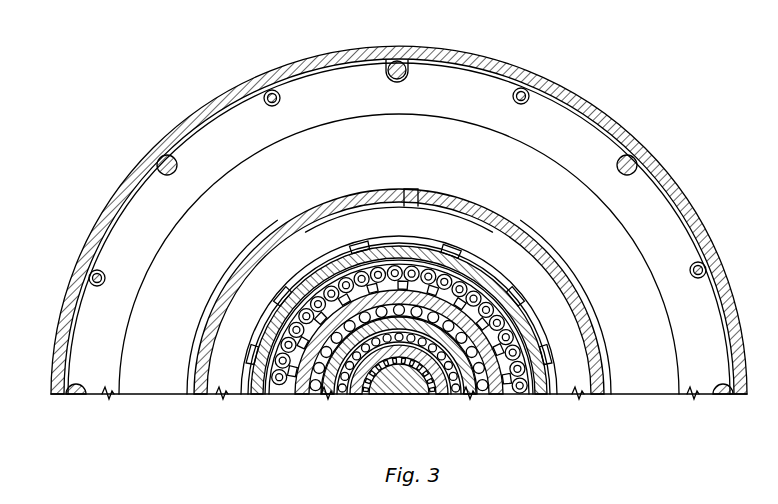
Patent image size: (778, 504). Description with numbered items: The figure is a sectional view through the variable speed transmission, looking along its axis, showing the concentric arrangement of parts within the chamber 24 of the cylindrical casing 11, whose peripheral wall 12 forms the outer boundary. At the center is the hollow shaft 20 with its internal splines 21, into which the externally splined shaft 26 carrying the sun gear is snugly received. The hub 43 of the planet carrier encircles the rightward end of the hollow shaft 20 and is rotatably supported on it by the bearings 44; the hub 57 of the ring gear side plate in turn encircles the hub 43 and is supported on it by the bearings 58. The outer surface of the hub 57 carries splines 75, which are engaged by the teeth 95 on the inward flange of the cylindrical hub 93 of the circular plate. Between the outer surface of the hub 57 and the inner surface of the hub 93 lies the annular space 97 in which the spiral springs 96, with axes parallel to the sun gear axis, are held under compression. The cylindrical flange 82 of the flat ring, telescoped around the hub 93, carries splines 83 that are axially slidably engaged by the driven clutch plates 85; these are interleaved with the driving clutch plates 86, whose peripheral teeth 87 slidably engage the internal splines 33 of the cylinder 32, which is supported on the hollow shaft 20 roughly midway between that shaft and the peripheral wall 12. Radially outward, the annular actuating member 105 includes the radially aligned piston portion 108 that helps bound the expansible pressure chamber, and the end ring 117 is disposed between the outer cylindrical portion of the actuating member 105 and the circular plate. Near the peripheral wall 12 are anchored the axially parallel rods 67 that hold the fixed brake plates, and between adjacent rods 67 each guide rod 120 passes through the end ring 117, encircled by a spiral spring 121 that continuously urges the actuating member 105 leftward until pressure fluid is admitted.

The casing 11 is at (541, 70).
The peripheral wall 12 is at (466, 52).
The hollow shaft 20 is at (445, 390).
The internal splines 21 is at (372, 387).
The chamber 24 is at (661, 176).
The externally splined shaft 26 is at (410, 390).
The cylinder 32 is at (378, 190).
The internal splines 33 is at (411, 204).
The hub 43 is at (470, 392).
The bearings 44 is at (343, 392).
The hub 57 is at (297, 387).
The bearings 58 is at (293, 318).
The rod 67 is at (396, 61).
The splines 75 is at (508, 397).
The cylindrical flange 82 is at (252, 388).
The splines 83 is at (272, 335).
The driven clutch plates 85 is at (557, 387).
The driving clutch plates 86 is at (208, 397).
The teeth 87 is at (200, 372).
The cylindrical hub 93 is at (272, 398).
The teeth 95 is at (528, 392).
The spiral springs 96 is at (500, 318).
The annular space 97 is at (482, 297).
The actuating member 105 is at (247, 253).
The piston portion 108 is at (278, 163).
The end ring 117 is at (140, 215).
The guide rod 120 is at (258, 87).
The spiral spring 121 is at (272, 90).